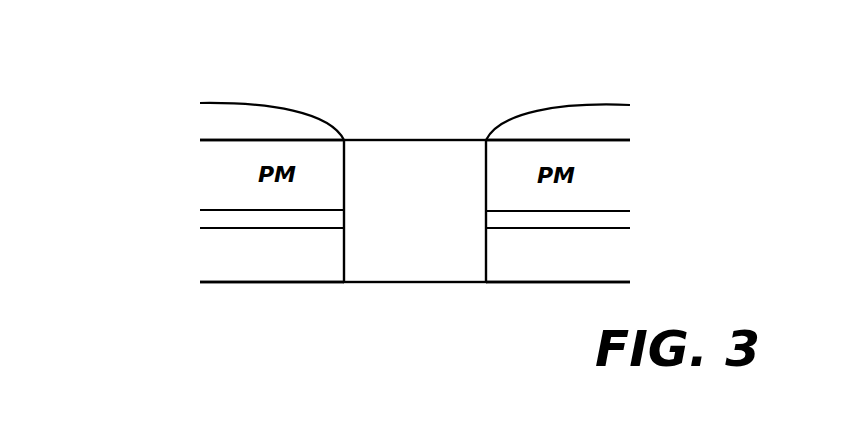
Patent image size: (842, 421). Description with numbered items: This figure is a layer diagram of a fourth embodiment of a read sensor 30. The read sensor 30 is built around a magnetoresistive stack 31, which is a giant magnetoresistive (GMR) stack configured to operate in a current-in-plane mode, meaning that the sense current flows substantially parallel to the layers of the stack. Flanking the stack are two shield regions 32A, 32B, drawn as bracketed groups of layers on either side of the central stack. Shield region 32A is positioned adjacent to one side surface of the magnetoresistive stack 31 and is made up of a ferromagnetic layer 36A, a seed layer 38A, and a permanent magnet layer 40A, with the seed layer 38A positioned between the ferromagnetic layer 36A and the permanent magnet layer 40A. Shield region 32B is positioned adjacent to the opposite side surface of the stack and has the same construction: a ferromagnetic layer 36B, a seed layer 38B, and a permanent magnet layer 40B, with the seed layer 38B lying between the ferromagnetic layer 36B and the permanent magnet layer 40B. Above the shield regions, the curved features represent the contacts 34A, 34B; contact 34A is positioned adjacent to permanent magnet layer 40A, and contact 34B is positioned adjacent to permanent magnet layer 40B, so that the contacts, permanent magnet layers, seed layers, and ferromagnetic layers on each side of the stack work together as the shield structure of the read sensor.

The read sensor 30 is at (288, 76).
The magnetoresistive stack 31 is at (378, 158).
The shield region 32A is at (105, 137).
The shield region 32B is at (723, 140).
The contact 34A is at (220, 120).
The contact 34B is at (608, 123).
The ferromagnetic layer 36A is at (217, 253).
The ferromagnetic layer 36B is at (608, 248).
The seed layer 38A is at (212, 217).
The seed layer 38B is at (605, 220).
The permanent magnet layer 40A is at (220, 173).
The permanent magnet layer 40B is at (603, 167).